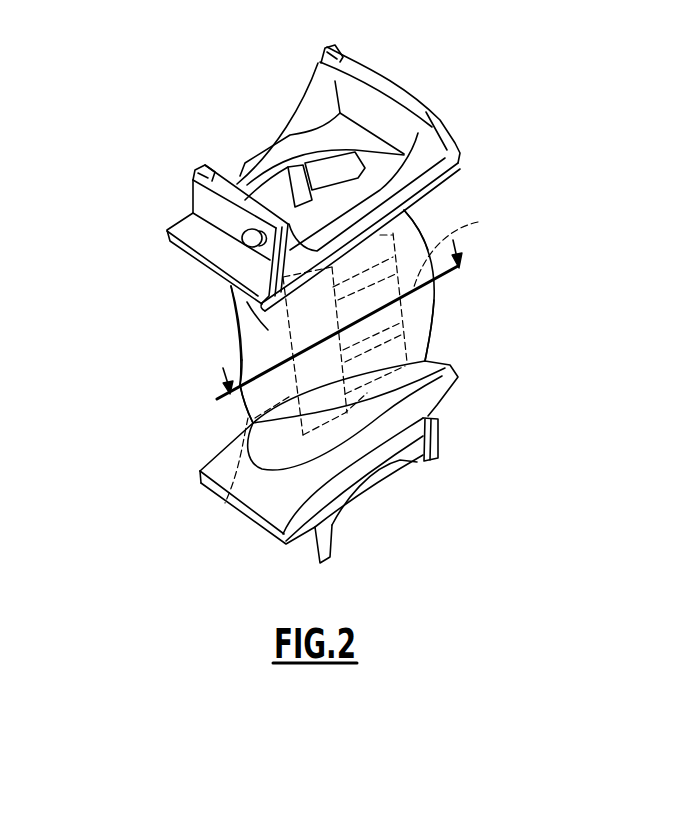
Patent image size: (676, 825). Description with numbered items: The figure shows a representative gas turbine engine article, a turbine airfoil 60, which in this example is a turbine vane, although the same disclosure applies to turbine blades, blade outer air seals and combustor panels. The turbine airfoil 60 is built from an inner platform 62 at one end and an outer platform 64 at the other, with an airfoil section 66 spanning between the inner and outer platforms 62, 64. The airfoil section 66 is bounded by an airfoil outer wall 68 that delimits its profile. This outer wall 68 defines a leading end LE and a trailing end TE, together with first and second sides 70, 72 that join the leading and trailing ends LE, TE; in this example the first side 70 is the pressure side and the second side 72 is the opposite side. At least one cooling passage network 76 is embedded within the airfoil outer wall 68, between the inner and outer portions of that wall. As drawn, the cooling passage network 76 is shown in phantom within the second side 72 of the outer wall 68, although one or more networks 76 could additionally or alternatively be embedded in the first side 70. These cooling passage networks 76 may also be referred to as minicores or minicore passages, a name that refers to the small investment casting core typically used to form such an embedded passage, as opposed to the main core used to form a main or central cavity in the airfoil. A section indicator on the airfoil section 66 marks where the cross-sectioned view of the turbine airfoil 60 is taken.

The turbine airfoil 60 is at (295, 304).
The inner platform 62 is at (452, 366).
The outer platform 64 is at (455, 167).
The airfoil section 66 is at (432, 313).
The airfoil outer wall 68 is at (403, 240).
The first side 70 is at (259, 336).
The second side 72 is at (268, 332).
The cooling passage network 76 is at (207, 509).
The leading end LE is at (237, 400).
The trailing end TE is at (428, 342).